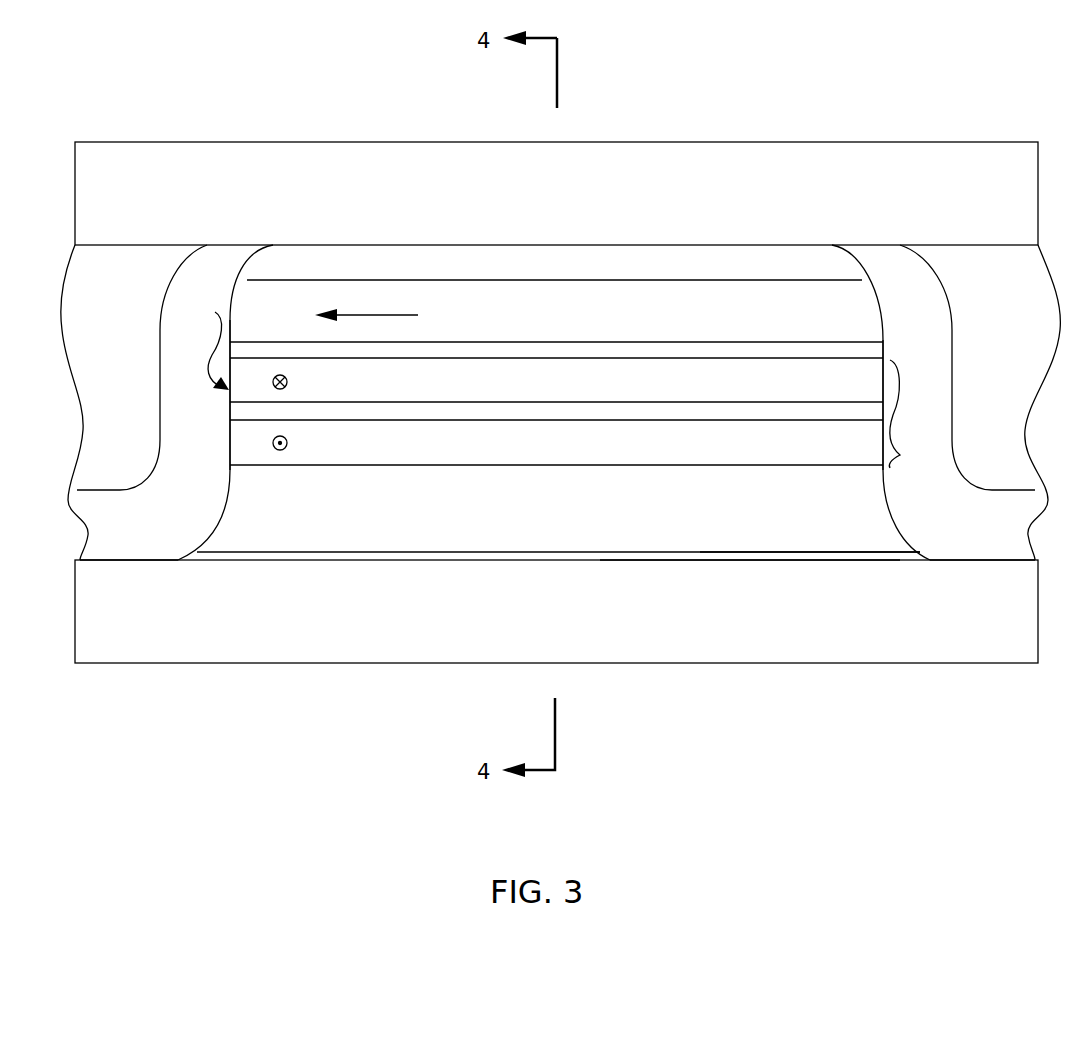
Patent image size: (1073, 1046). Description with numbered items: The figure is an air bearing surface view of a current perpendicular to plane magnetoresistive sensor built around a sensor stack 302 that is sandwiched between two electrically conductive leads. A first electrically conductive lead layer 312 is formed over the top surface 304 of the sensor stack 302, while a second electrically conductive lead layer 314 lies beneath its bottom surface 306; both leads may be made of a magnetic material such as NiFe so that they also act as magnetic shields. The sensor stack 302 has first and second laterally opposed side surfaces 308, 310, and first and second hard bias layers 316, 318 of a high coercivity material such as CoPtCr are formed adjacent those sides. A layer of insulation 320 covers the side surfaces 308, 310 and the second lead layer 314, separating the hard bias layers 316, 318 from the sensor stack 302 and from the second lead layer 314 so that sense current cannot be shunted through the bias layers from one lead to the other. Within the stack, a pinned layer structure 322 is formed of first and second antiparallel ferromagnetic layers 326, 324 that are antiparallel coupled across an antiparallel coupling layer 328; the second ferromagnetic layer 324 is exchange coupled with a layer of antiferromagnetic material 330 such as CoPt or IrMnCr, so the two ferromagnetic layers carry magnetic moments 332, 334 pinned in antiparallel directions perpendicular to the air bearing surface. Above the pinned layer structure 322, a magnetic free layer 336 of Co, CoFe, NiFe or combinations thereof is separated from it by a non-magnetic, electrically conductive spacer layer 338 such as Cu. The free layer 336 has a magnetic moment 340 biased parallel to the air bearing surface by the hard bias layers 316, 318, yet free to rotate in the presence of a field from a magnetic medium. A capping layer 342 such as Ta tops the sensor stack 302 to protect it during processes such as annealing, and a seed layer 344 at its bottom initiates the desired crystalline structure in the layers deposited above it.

The sensor stack 302 is at (203, 347).
The top surface 304 is at (320, 245).
The bottom surface 306 is at (688, 560).
The first side surface 308 is at (885, 354).
The second side surface 310 is at (230, 447).
The first electrically conductive lead layer 312 is at (577, 193).
The second electrically conductive lead layer 314 is at (505, 613).
The first hard bias layer 316 is at (1034, 320).
The second hard bias layer 318 is at (143, 305).
The insulation layer 320 is at (200, 518).
The pinned layer structure 322 is at (900, 455).
The second antiparallel ferromagnetic layer 324 is at (478, 444).
The first antiparallel ferromagnetic layer 326 is at (478, 384).
The antiparallel coupling layer 328 is at (697, 412).
The antiferromagnetic layer 330 is at (485, 503).
The magnetic moment of second ferromagnetic layer 332 is at (288, 444).
The magnetic moment of first ferromagnetic layer 334 is at (288, 383).
The free layer 336 is at (483, 315).
The spacer layer 338 is at (642, 352).
The magnetic moment of free layer 340 is at (375, 315).
The capping layer 342 is at (645, 263).
The seed layer 344 is at (805, 552).